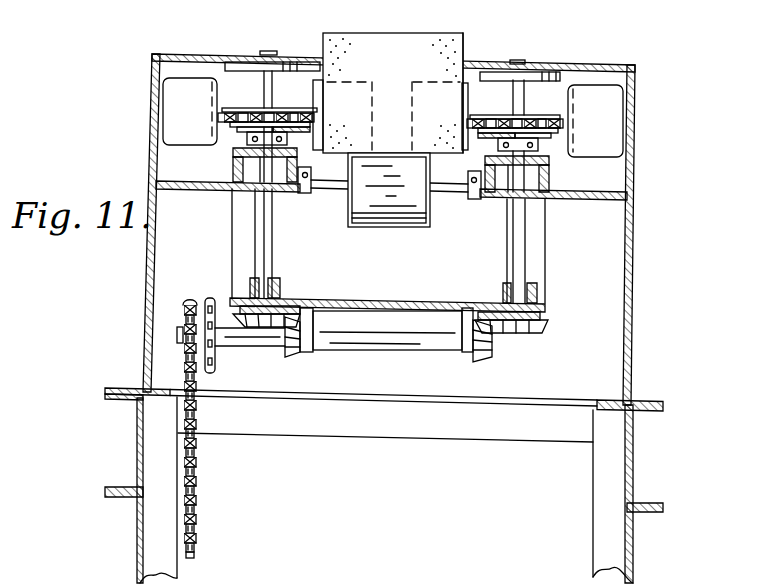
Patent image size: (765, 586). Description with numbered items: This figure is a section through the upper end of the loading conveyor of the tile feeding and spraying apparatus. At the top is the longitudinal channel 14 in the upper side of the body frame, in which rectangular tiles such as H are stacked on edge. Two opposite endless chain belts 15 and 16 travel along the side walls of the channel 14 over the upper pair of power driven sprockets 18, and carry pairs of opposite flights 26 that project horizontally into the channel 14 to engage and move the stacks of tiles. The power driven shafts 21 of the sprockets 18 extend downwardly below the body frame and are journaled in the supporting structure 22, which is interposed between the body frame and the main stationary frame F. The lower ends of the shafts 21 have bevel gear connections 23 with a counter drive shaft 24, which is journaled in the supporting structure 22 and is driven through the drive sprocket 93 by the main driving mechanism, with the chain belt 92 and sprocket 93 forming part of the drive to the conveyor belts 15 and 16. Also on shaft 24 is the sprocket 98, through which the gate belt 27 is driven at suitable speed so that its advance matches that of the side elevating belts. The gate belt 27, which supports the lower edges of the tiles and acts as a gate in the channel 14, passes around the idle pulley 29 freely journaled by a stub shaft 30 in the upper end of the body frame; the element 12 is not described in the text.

The base 12 is at (46, 585).
The channel 14 is at (463, 92).
The endless chain belt 15 is at (565, 128).
The endless chain belt 16 is at (235, 112).
The power driven sprockets 18 is at (222, 108).
The power driven shafts 21 is at (257, 214).
The supporting structure 22 is at (538, 263).
The bevel gear connections 23 is at (297, 305).
The counter drive shaft 24 is at (382, 349).
The flights 26 is at (170, 79).
The gate belt 27 is at (409, 216).
The idle pulley 29 is at (432, 212).
The stub shafts 30 is at (333, 198).
The chain belt 92 is at (193, 473).
The drive sprocket 93 is at (182, 358).
The sprocket 98 is at (215, 364).
The main stationary frame F is at (633, 457).
The tile H is at (393, 93).